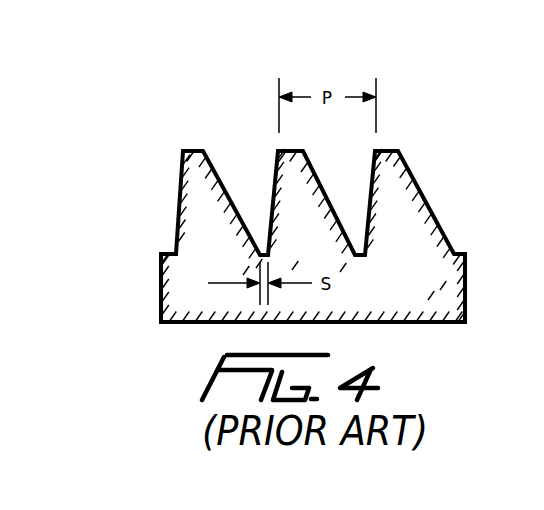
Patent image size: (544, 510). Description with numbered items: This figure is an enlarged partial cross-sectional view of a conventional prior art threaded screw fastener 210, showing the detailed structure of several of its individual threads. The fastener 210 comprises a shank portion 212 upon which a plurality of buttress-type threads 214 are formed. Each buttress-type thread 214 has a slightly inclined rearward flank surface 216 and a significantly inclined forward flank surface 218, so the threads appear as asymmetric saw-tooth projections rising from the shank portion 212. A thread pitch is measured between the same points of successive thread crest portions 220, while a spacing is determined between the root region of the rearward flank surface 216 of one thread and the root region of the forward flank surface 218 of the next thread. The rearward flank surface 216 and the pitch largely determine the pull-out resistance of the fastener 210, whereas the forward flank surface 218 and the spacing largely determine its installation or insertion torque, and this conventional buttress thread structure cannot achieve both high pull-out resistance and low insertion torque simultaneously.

The threaded screw fastener 210 is at (421, 109).
The shank portion 212 is at (420, 302).
The buttress-type threads 214 is at (185, 216).
The rearward flank surface 216 is at (179, 172).
The forward flank surface 218 is at (229, 185).
The thread crest portions 220 is at (192, 150).